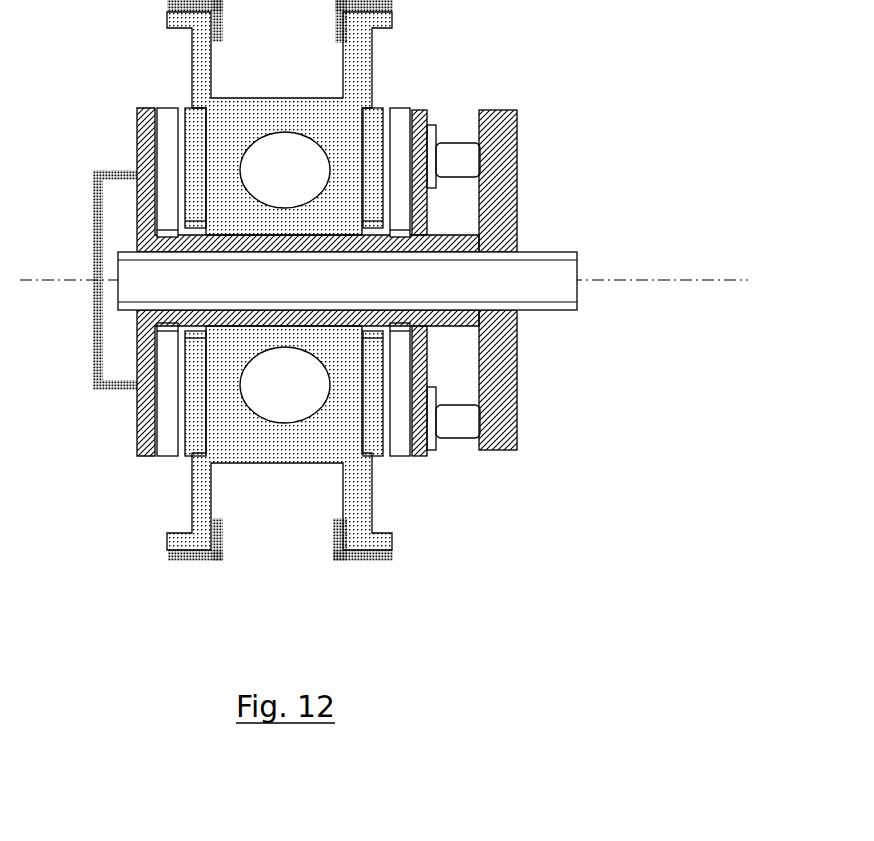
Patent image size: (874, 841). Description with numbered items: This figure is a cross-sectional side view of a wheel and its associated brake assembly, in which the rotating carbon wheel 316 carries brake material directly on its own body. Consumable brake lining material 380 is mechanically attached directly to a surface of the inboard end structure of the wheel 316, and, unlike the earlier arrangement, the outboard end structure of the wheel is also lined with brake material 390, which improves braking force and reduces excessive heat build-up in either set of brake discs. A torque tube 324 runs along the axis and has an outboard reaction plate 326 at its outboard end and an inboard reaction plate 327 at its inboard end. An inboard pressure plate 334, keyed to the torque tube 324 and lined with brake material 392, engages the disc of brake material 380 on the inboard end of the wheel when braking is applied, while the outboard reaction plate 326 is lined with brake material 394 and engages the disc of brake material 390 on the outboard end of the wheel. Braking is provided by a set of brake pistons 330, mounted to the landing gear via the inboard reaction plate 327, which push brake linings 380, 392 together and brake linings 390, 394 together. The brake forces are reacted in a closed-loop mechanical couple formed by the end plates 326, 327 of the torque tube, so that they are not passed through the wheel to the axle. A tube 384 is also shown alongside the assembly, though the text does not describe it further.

The wheel 316 is at (278, 106).
The torque tube 324 is at (284, 237).
The outboard reaction plate 326 is at (140, 140).
The inboard reaction plate 327 is at (508, 180).
The brake pistons 330 is at (458, 428).
The inboard pressure plate 334 is at (422, 118).
The brake lining material 380 is at (375, 453).
The tube 384 is at (100, 246).
The brake material 390 is at (190, 457).
The brake material 392 is at (399, 117).
The brake material 394 is at (165, 118).